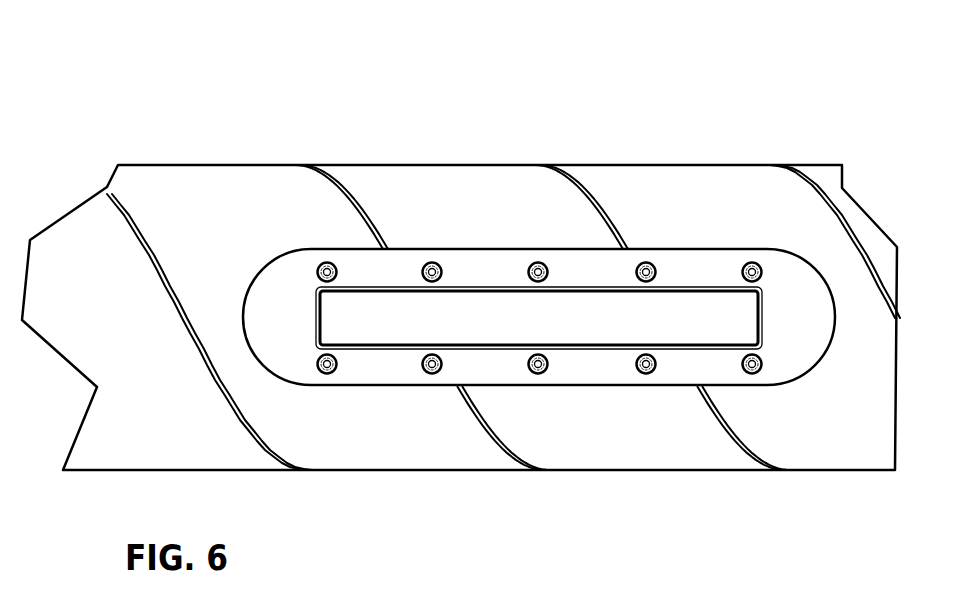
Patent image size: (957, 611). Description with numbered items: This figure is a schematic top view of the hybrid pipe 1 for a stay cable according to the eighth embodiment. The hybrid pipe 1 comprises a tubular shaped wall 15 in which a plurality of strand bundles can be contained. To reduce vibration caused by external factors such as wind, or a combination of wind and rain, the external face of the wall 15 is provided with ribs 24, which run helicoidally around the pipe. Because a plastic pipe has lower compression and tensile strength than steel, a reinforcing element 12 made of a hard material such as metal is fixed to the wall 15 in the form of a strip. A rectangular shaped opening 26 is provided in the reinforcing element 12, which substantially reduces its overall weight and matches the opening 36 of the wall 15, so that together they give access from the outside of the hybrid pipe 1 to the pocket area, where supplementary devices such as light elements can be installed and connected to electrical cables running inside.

The hybrid pipe 1 is at (786, 110).
The reinforcing element 12 is at (797, 305).
The wall 15 is at (235, 205).
The ribs 24 is at (363, 203).
The opening 26 is at (577, 322).
The opening 36 is at (539, 318).